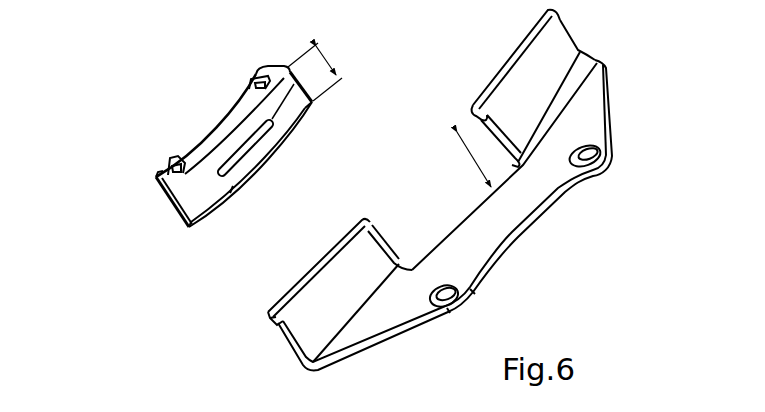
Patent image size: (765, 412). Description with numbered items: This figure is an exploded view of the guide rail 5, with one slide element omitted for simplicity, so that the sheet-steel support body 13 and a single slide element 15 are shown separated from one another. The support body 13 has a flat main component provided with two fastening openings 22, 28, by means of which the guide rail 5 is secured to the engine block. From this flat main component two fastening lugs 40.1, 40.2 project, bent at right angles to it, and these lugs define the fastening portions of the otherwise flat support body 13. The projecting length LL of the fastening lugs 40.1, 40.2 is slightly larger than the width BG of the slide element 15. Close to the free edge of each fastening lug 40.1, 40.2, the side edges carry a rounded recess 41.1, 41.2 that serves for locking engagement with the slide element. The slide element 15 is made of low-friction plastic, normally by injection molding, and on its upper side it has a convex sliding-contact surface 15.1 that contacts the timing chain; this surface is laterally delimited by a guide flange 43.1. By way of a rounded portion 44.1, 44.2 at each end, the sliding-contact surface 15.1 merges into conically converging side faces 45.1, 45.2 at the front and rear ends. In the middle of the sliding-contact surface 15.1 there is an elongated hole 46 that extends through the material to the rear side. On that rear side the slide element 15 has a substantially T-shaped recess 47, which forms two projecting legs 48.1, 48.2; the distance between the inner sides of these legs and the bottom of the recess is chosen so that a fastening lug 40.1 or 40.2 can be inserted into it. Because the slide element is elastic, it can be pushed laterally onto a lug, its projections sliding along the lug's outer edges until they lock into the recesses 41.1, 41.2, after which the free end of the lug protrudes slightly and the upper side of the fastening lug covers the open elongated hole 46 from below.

The guide rail 5 is at (434, 185).
The support body 13 is at (489, 227).
The slide element 15 is at (236, 170).
The sliding-contact surface 15.1 is at (236, 134).
The fastening opening 22 is at (612, 158).
The fastening opening 28 is at (466, 298).
The fastening lug 40.1 is at (526, 72).
The fastening lug 40.2 is at (316, 293).
The rounded recess 41.1 is at (556, 14).
The rounded recess 41.2 is at (476, 121).
The guide flange 43.1 is at (212, 133).
The rounded portion 44.1 is at (306, 86).
The rounded portion 44.2 is at (170, 201).
The conically converging side face 45.1 is at (281, 66).
The conically converging side face 45.2 is at (160, 187).
The elongated hole 46 is at (265, 134).
The T-shaped recess 47 is at (226, 117).
The projecting leg 48.1 is at (250, 80).
The projecting leg 48.2 is at (166, 166).
The width of the slide elements BG is at (328, 62).
The projecting length of the fastening lugs LL is at (457, 167).